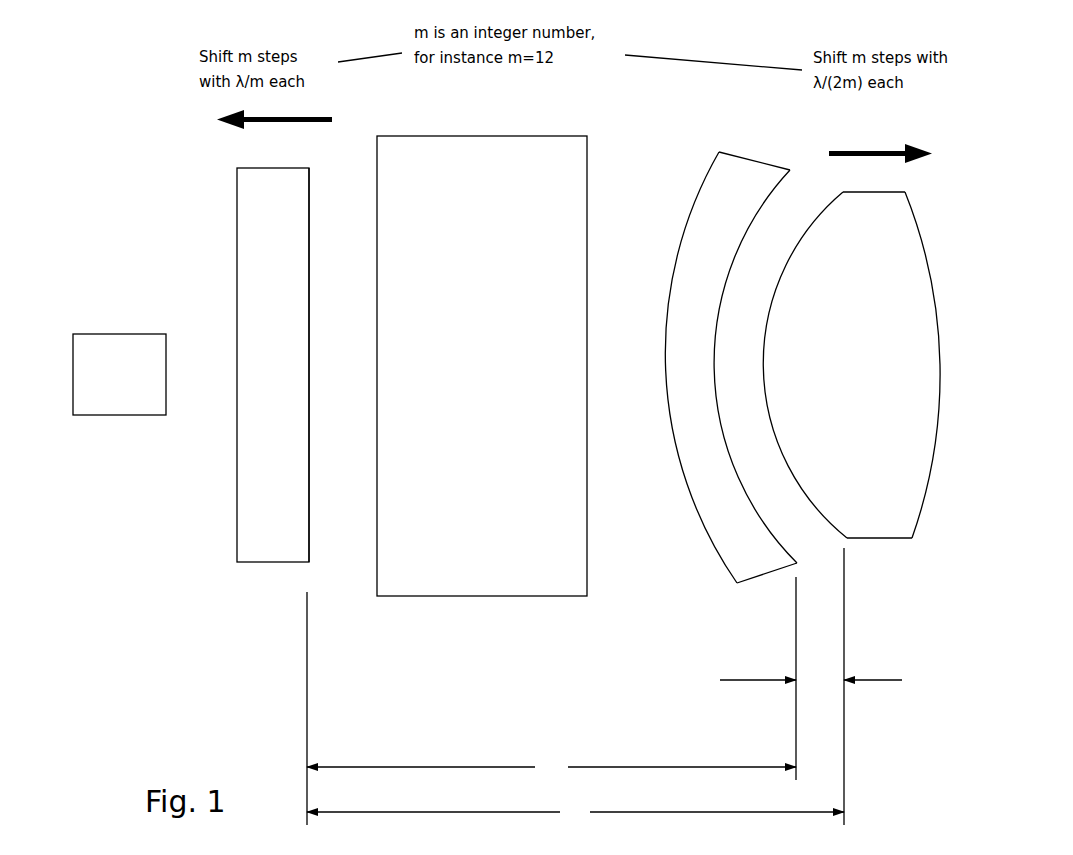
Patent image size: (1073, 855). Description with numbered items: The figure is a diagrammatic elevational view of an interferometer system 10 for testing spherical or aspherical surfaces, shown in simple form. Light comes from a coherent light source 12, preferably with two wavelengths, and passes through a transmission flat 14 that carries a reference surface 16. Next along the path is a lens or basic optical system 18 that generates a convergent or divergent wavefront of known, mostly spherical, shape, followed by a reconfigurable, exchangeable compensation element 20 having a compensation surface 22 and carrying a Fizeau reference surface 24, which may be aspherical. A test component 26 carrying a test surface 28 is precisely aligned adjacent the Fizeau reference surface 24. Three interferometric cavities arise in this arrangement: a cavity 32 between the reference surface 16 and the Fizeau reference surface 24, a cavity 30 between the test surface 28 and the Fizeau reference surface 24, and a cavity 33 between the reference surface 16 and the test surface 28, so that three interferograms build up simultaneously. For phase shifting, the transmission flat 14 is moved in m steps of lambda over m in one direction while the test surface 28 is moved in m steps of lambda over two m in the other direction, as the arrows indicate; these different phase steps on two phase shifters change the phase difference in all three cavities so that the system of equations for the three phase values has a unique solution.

The interferometer system 10 is at (960, 192).
The coherent light source 12 is at (88, 334).
The transmission flat 14 is at (259, 519).
The reference surface 16 is at (309, 474).
The basic optical system 18 is at (558, 182).
The compensation element 20 is at (707, 349).
The compensation surface 22 is at (682, 237).
The Fizeau reference surface 24 is at (716, 334).
The test component 26 is at (870, 365).
The test surface 28 is at (766, 386).
The cavity 30 is at (834, 682).
The cavity 32 is at (551, 768).
The cavity 33 is at (575, 813).